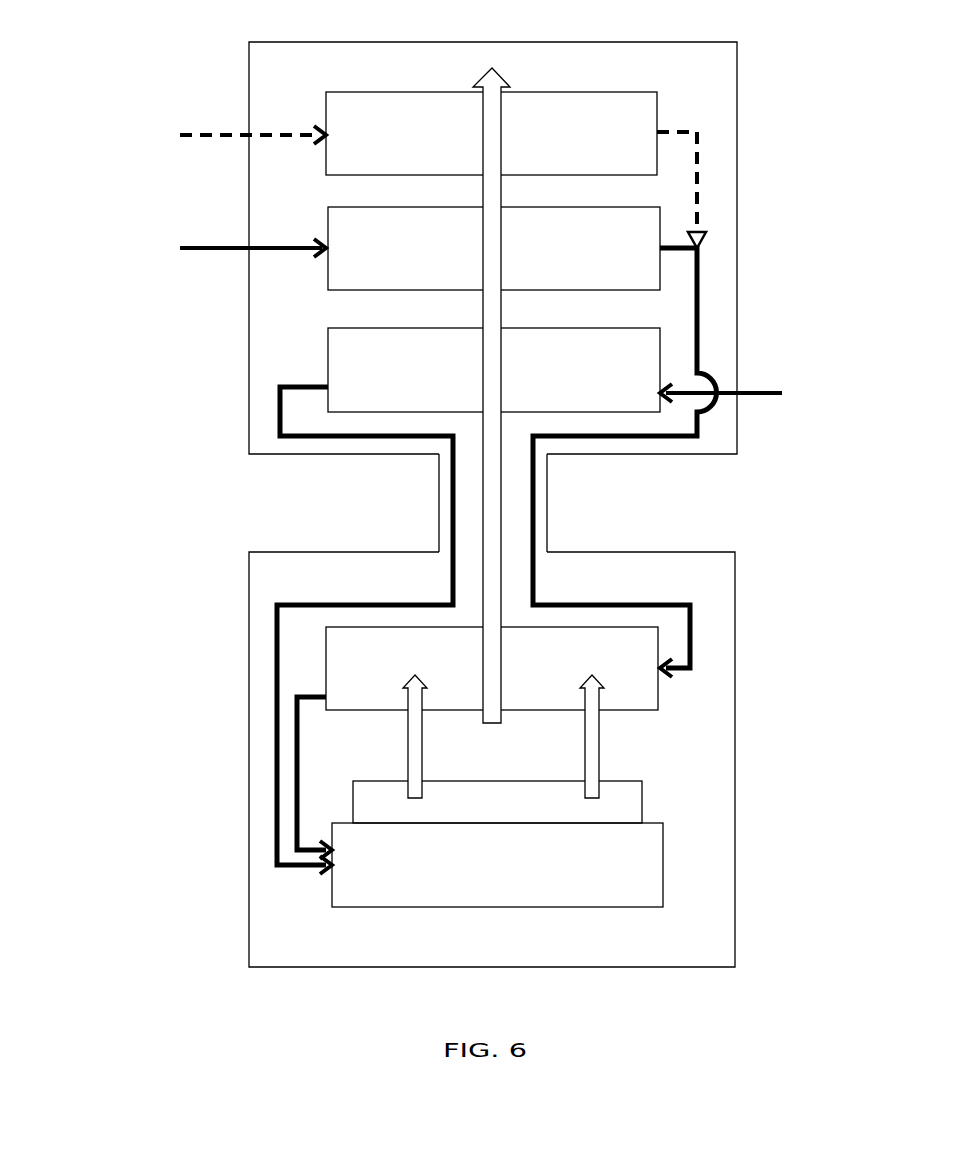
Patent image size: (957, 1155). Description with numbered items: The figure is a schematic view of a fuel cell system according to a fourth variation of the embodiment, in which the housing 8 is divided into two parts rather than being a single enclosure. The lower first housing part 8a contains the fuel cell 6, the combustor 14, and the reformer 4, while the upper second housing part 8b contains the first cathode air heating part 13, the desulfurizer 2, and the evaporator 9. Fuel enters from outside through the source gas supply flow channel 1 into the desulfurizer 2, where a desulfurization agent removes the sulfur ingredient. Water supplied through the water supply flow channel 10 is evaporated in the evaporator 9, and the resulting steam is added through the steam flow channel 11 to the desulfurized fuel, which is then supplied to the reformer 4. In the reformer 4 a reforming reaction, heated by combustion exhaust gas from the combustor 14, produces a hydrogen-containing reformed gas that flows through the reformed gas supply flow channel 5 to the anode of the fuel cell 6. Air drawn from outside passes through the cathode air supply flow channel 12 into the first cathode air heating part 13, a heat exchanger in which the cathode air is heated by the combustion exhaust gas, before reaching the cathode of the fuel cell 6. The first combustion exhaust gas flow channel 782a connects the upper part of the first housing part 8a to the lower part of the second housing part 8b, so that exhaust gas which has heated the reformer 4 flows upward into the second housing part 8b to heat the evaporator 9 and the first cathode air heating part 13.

The source gas supply flow channel 1 is at (230, 248).
The desulfurizer 2 is at (660, 243).
The reformer 4 is at (326, 672).
The reformed gas supply flow channel 5 is at (297, 742).
The fuel cell 6 is at (332, 870).
The housing 8 is at (425, 504).
The first housing part 8a is at (249, 617).
The second housing part 8b is at (249, 352).
The evaporator 9 is at (657, 105).
The water supply flow channel 10 is at (237, 135).
The steam flow channel 11 is at (697, 163).
The cathode air supply flow channel 12 is at (277, 733).
The first cathode air heating part 13 is at (697, 280).
The combustor 14 is at (353, 805).
The first combustion exhaust gas flow channel 782a is at (547, 512).